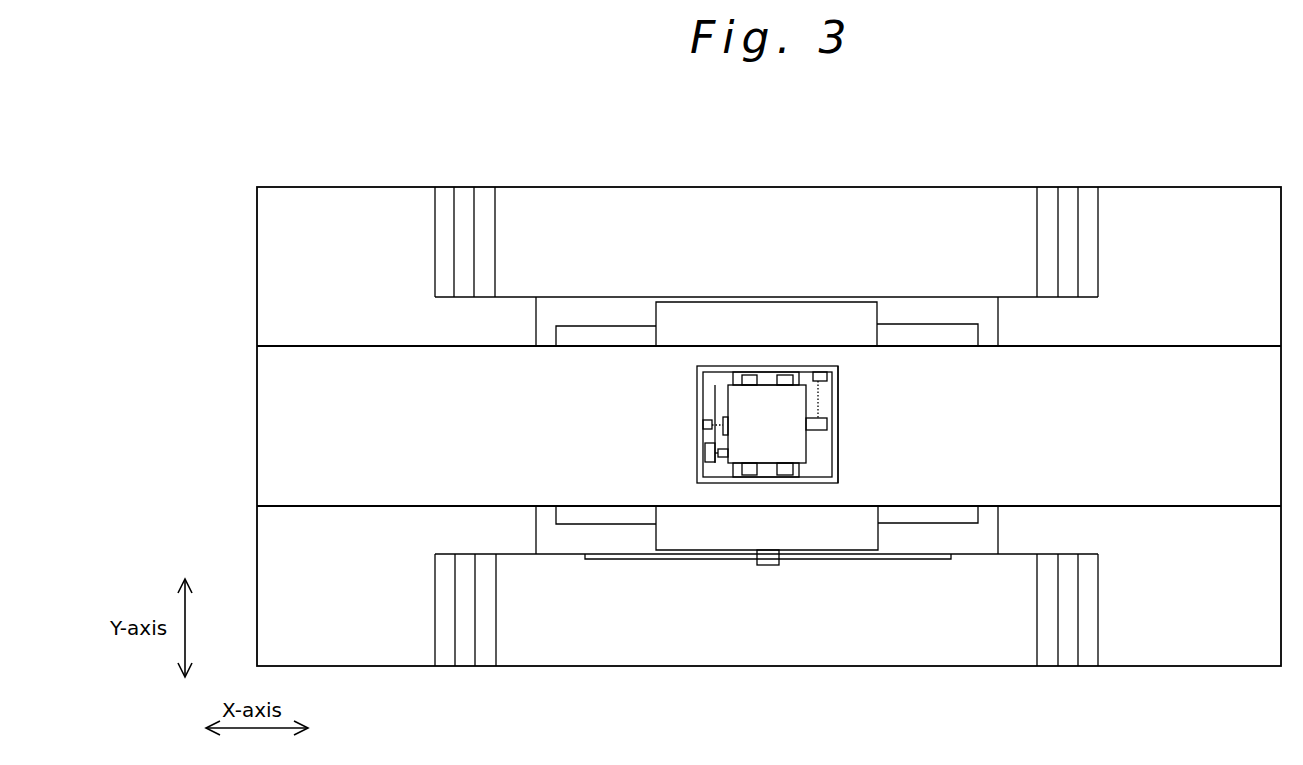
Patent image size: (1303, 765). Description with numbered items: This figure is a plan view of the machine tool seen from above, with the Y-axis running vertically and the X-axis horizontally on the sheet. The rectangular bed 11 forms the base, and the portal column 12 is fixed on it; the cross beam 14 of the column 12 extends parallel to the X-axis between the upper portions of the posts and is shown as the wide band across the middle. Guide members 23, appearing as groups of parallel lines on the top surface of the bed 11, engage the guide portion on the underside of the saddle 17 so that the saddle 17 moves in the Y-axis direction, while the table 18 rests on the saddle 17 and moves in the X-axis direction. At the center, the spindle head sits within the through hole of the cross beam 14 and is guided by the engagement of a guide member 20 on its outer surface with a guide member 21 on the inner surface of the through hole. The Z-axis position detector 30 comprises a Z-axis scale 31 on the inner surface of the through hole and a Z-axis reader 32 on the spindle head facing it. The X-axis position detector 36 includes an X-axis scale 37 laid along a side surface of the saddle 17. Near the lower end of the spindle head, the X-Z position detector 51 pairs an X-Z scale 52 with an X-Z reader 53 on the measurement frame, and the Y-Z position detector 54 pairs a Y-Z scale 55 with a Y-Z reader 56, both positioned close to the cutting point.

The bed 11 is at (720, 193).
The portal column 12 is at (707, 426).
The cross beam 14 is at (263, 433).
The saddle 17 is at (595, 305).
The table 18 is at (852, 302).
The guide member 20 is at (788, 377).
The guide member 21 is at (770, 373).
The guide member 23 is at (465, 194).
The Z-axis position detector 30 is at (696, 488).
The Z-axis scale 31 is at (713, 463).
The Z-axis reader 32 is at (722, 458).
The X-axis position detector 36 is at (770, 574).
The X-axis scale 37 is at (797, 560).
The X-Z position detector 51 is at (845, 403).
The X-Z scale 52 is at (827, 424).
The X-Z reader 53 is at (827, 377).
The Y-Z position detector 54 is at (714, 410).
The Y-Z scale 55 is at (725, 415).
The Y-Z reader 56 is at (703, 425).